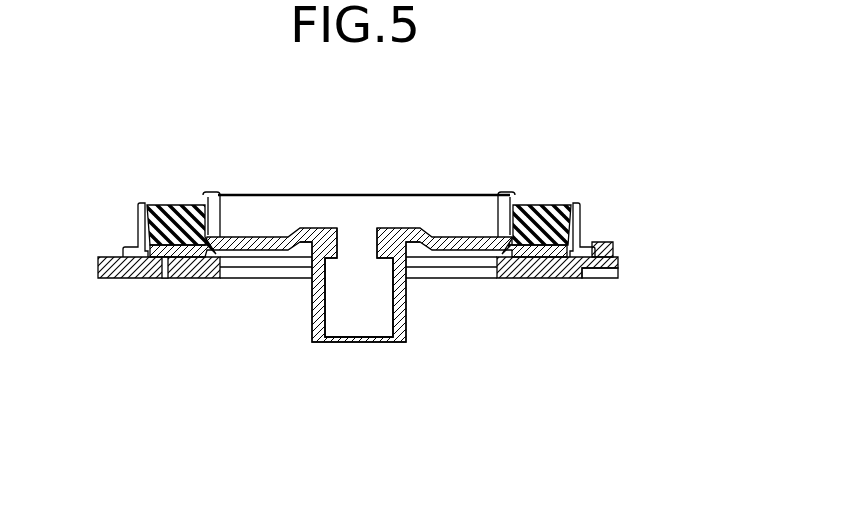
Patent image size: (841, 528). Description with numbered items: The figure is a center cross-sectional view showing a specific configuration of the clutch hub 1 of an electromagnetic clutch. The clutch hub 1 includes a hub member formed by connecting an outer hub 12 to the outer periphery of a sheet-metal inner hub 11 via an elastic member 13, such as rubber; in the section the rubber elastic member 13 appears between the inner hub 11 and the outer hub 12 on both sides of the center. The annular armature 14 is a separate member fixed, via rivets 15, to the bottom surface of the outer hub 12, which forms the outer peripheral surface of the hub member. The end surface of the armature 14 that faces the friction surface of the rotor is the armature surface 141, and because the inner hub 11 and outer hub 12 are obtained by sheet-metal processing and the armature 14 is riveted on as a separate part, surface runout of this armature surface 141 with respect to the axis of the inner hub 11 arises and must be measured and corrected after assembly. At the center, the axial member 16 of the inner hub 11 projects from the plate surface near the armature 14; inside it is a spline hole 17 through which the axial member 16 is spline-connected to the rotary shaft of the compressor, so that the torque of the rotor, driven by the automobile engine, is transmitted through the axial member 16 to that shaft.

The clutch hub 1 is at (370, 164).
The inner hub 11 is at (358, 242).
The outer hub 12 is at (592, 200).
The elastic member 13 is at (545, 208).
The annular armature 14 is at (394, 292).
The armature surface 141 is at (138, 278).
The rivets 15 is at (603, 242).
The axial member 16 is at (310, 308).
The spline hole 17 is at (357, 325).